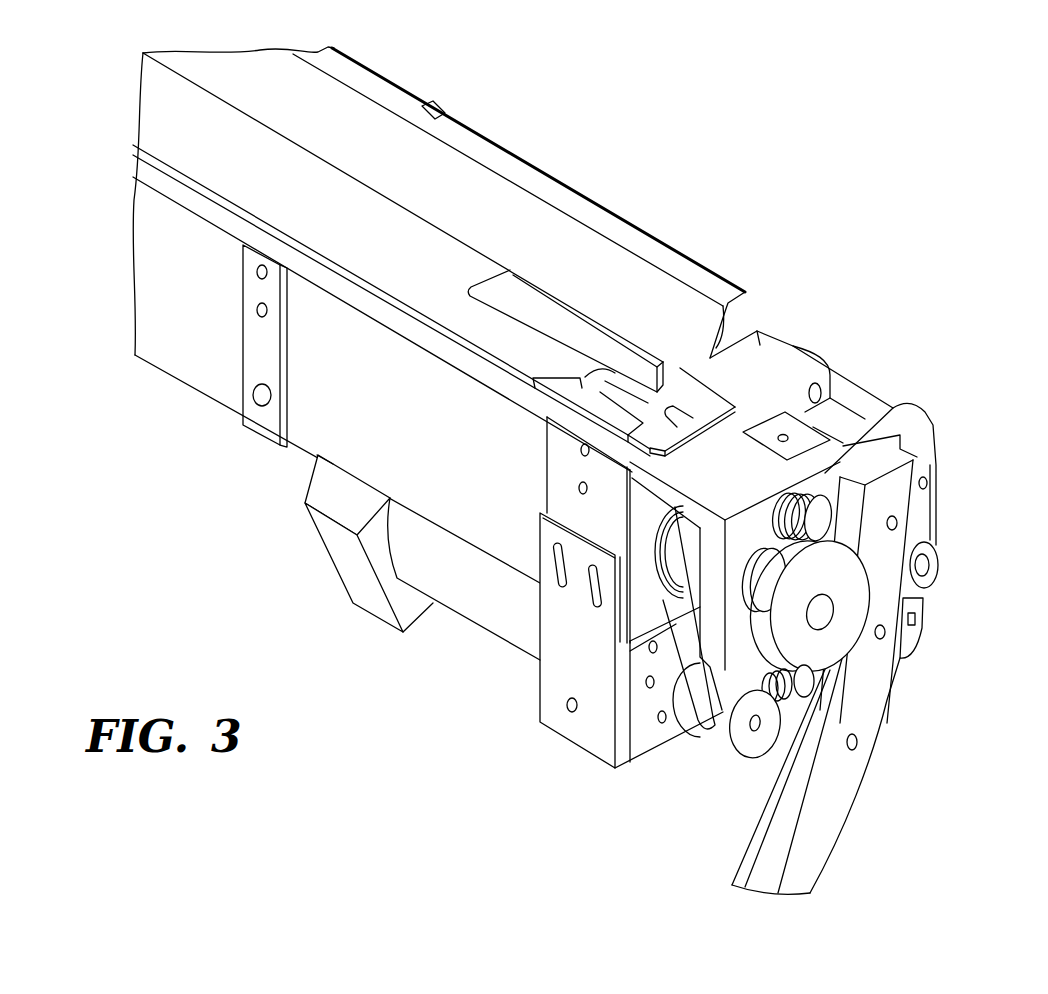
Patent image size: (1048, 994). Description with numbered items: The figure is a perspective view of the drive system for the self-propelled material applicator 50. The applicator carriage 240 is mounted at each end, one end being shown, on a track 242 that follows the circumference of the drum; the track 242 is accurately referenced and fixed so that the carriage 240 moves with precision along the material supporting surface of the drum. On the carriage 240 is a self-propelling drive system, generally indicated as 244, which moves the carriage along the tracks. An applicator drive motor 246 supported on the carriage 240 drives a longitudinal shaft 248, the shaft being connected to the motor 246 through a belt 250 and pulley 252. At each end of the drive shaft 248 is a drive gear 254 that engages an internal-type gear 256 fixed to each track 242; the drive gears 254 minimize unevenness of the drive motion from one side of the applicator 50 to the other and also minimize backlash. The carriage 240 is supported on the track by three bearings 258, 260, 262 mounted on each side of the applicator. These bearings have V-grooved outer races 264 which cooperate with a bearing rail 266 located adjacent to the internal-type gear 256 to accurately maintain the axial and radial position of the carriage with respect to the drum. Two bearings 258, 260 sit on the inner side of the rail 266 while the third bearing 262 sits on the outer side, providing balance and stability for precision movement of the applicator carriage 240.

The self-propelled material applicator 50 is at (724, 213).
The applicator carriage 240 is at (165, 118).
The track 242 is at (823, 828).
The self-propelling drive system 244 is at (685, 760).
The applicator drive motor 246 is at (498, 600).
The longitudinal shaft 248 is at (765, 572).
The belt 250 is at (717, 708).
The pulley 252 is at (660, 562).
The drive gear 254 is at (810, 589).
The internal-type gear 256 is at (775, 850).
The bearing 258 is at (812, 514).
The bearing 260 is at (798, 690).
The bearing 262 is at (940, 566).
The V-grooved outer race 264 is at (797, 493).
The bearing rail 266 is at (882, 457).